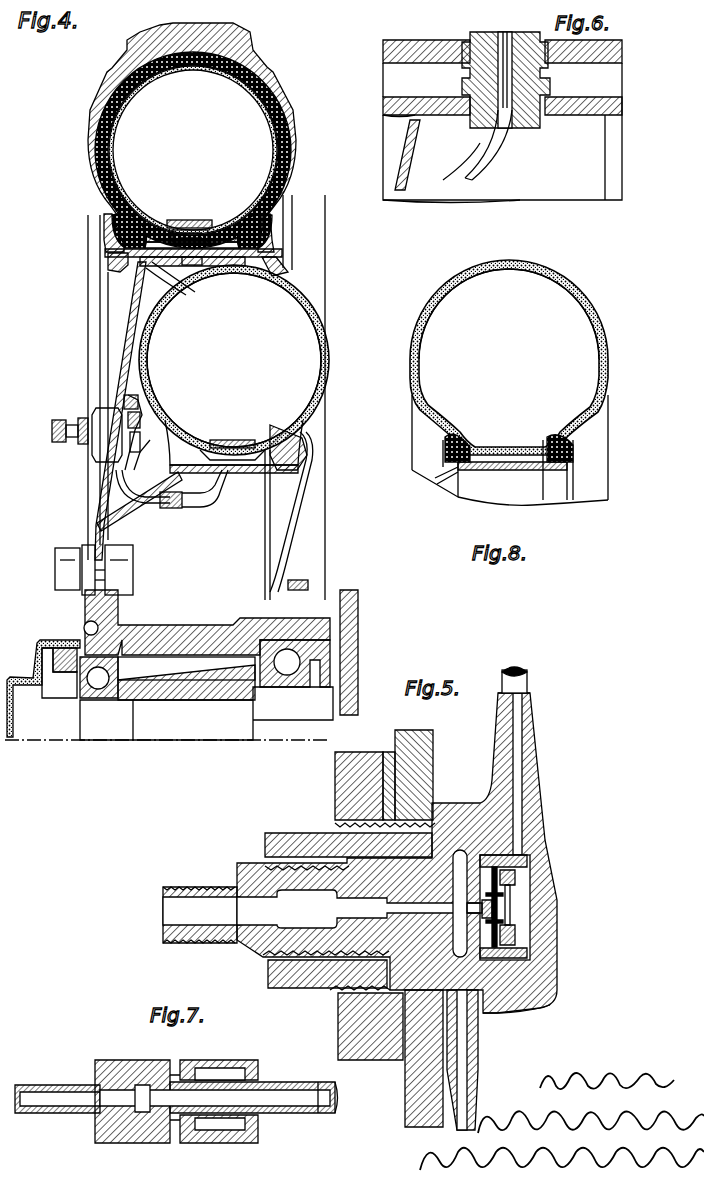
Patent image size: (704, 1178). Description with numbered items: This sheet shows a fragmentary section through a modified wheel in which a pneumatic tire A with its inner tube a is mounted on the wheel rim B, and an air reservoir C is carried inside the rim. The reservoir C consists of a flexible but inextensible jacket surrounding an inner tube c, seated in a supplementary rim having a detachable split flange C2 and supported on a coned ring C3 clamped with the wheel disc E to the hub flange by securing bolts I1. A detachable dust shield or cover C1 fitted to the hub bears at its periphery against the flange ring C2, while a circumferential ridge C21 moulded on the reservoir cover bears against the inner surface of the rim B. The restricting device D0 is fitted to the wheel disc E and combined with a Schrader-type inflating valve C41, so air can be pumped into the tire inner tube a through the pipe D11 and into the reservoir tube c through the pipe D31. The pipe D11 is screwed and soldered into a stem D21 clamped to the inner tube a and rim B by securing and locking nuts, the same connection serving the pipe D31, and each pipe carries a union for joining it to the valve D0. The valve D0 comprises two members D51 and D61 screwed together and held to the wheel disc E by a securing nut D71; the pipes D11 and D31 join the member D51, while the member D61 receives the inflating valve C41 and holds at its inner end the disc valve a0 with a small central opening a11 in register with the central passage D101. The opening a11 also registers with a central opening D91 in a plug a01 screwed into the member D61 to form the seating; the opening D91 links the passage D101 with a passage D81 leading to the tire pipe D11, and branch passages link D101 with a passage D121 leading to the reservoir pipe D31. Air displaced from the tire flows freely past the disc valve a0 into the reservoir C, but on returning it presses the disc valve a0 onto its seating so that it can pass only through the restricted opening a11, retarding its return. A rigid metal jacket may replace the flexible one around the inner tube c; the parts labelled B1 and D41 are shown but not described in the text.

In FIG. 4, the pneumatic tire A is at (197, 117).
In FIG. 4, the tire inner tube a is at (193, 150).
In FIG. 6, the tire inner tube a is at (423, 43).
In FIG. 4, the wheel rim B is at (277, 213).
In FIG. 6, the wheel rim B is at (442, 110).
In FIG. 4, the rim flange bracket B1 is at (100, 218).
In FIG. 4, the air reservoir C is at (263, 323).
In FIG. 8, the air reservoir C is at (598, 308).
In FIG. 4, the reservoir inner tube c is at (234, 360).
In FIG. 8, the reservoir inner tube c is at (597, 343).
In FIG. 4, the dust shield or cover C1 is at (268, 470).
In FIG. 8, the dust shield or cover C1 is at (497, 467).
In FIG. 4, the detachable split flange C2 is at (300, 443).
In FIG. 8, the detachable split flange C2 is at (570, 457).
In FIG. 4, the coned ring C3 is at (120, 513).
In FIG. 8, the coned ring C3 is at (440, 487).
In FIG. 4, the circumferential ridge C21 is at (267, 262).
In FIG. 4, the inflating valve C41 is at (68, 410).
In FIG. 5, the inflating valve C41 is at (188, 900).
In FIG. 4, the restricting device D0 is at (118, 442).
In FIG. 5, the restricting device D0 is at (522, 862).
In FIG. 4, the tire connecting pipe D11 is at (153, 290).
In FIG. 6, the tire connecting pipe D11 is at (537, 90).
In FIG. 5, the tire connecting pipe D11 is at (523, 683).
In FIG. 7, the tire connecting pipe D11 is at (53, 1100).
In FIG. 6, the plug or stem D21 is at (446, 171).
In FIG. 4, the reservoir connecting pipe D31 is at (130, 483).
In FIG. 5, the reservoir connecting pipe D31 is at (490, 1037).
In FIG. 5, the lower nut D41 is at (450, 940).
In FIG. 5, the valve member D51 is at (537, 900).
In FIG. 5, the valve member D61 is at (350, 953).
In FIG. 5, the securing nut D71 is at (373, 1062).
In FIG. 5, the passage D81 is at (517, 833).
In FIG. 5, the central opening D91 is at (523, 883).
In FIG. 5, the central passage D101 is at (380, 837).
In FIG. 5, the passage D121 is at (420, 985).
In FIG. 5, the disc valve a0 is at (520, 973).
In FIG. 5, the seating plug a01 is at (527, 910).
In FIG. 5, the central opening of disc valve a11 is at (520, 947).
In FIG. 4, the wheel disc E is at (128, 328).
In FIG. 6, the wheel disc E is at (420, 167).
In FIG. 4, the securing bolts I1 is at (82, 570).